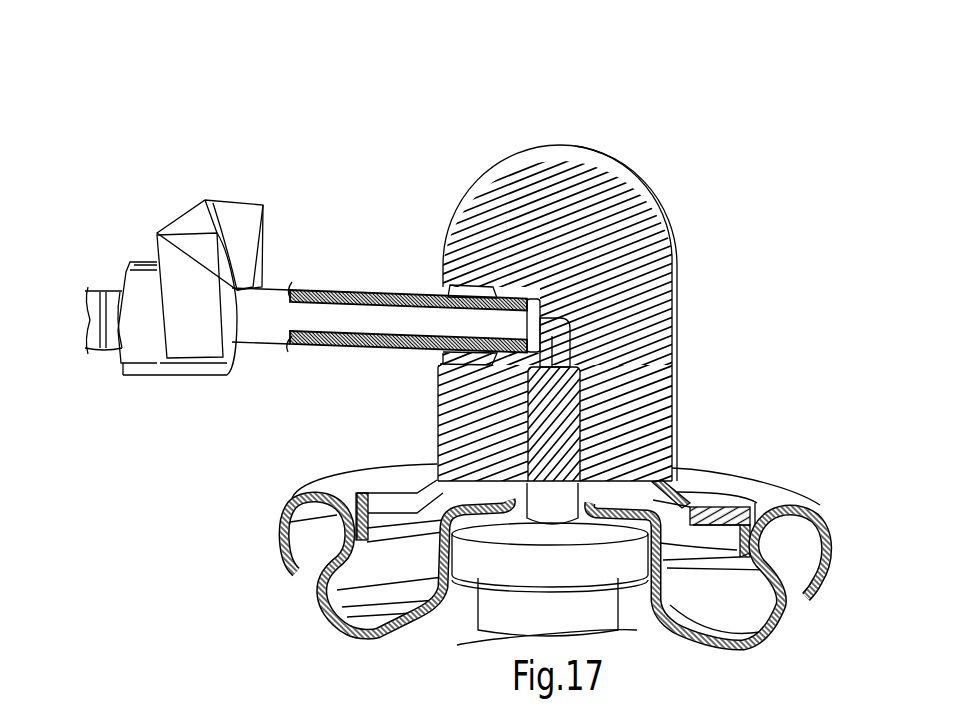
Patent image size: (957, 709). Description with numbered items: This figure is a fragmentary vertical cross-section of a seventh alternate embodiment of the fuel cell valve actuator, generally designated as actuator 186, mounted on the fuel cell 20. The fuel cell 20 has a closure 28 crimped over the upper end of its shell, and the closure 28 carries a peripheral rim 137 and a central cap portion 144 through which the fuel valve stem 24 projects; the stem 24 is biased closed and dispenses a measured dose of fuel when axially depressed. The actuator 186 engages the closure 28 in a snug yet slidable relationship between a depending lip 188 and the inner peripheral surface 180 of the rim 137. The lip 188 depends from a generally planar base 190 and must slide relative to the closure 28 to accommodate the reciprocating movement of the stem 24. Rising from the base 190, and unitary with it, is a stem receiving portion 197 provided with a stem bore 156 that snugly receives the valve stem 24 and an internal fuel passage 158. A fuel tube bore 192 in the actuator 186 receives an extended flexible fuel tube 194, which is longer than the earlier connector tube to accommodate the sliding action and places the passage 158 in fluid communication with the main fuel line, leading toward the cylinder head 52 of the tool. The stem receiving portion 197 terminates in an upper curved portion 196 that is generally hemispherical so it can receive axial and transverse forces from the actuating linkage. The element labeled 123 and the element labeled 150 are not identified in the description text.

The fuel cell 20 is at (252, 609).
The fuel valve stem 24 is at (540, 508).
The closure 28 is at (725, 593).
The cylinder head 52 is at (147, 293).
The shaft end 123 is at (98, 290).
The rim 137 is at (820, 505).
The cap portion 144 is at (672, 612).
The block 150 is at (192, 340).
The stem bore 156 is at (578, 412).
The internal fuel passage 158 is at (582, 327).
The inner surface 180 is at (337, 617).
The actuator 186 is at (702, 143).
The depending lip 188 is at (752, 505).
The base 190 is at (713, 500).
The fuel tube bore 192 is at (445, 292).
The fuel tube 194 is at (370, 348).
The upper curved portion 196 is at (592, 145).
The stem receiving portion 197 is at (667, 248).